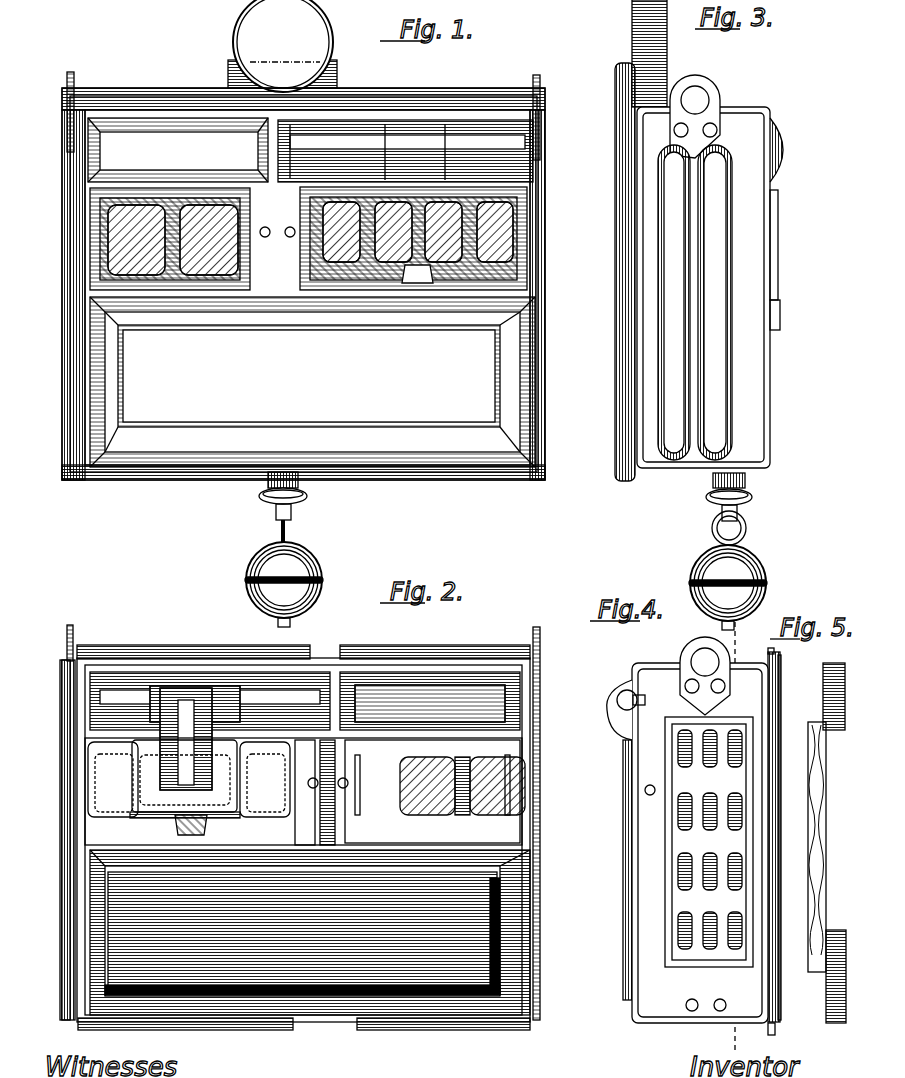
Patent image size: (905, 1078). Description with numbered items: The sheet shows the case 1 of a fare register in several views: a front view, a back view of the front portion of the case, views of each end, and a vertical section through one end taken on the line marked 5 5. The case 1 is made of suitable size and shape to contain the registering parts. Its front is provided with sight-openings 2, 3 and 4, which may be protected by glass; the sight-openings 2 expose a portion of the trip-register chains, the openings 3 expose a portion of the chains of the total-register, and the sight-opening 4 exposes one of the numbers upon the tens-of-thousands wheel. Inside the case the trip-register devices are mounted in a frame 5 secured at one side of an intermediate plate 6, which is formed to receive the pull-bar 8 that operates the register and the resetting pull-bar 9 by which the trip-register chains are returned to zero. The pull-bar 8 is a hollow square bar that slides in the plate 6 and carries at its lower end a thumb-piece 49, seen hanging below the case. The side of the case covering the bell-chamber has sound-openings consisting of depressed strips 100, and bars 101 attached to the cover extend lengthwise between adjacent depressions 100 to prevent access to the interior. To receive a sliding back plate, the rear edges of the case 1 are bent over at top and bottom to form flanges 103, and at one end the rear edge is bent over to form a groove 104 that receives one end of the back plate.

In FIG. 1, the case 1 is at (312, 382).
In FIG. 3, the case 1 is at (768, 434).
In FIG. 2, the case 1 is at (310, 932).
In FIG. 4, the case 1 is at (693, 830).
In FIG. 1, the sight-openings 2 is at (170, 239).
In FIG. 2, the sight-openings 2 is at (435, 791).
In FIG. 1, the sight-openings 3 is at (413, 238).
In FIG. 2, the sight-openings 3 is at (189, 779).
In FIG. 1, the sight-opening 4 is at (417, 274).
In FIG. 2, the sight-opening 4 is at (191, 825).
In FIG. 4, the frame 5 is at (742, 842).
In FIG. 4, the plate 6 is at (626, 940).
In FIG. 5, the plate 6 is at (838, 875).
In FIG. 1, the pull-bar 8 is at (305, 490).
In FIG. 3, the pull-bar 8 is at (748, 484).
In FIG. 1, the resetting pull-bar 9 is at (333, 89).
In FIG. 3, the resetting pull-bar 9 is at (632, 26).
In FIG. 1, the thumb-piece 49 is at (322, 596).
In FIG. 3, the thumb-piece 49 is at (766, 575).
In FIG. 4, the depressed strips 100 is at (733, 768).
In FIG. 5, the depressed strips 100 is at (818, 760).
In FIG. 5, the bars 101 is at (818, 800).
In FIG. 2, the flanges 103 is at (178, 637).
In FIG. 4, the flanges 103 is at (780, 648).
In FIG. 2, the groove 104 is at (62, 820).
In FIG. 4, the groove 104 is at (778, 1018).